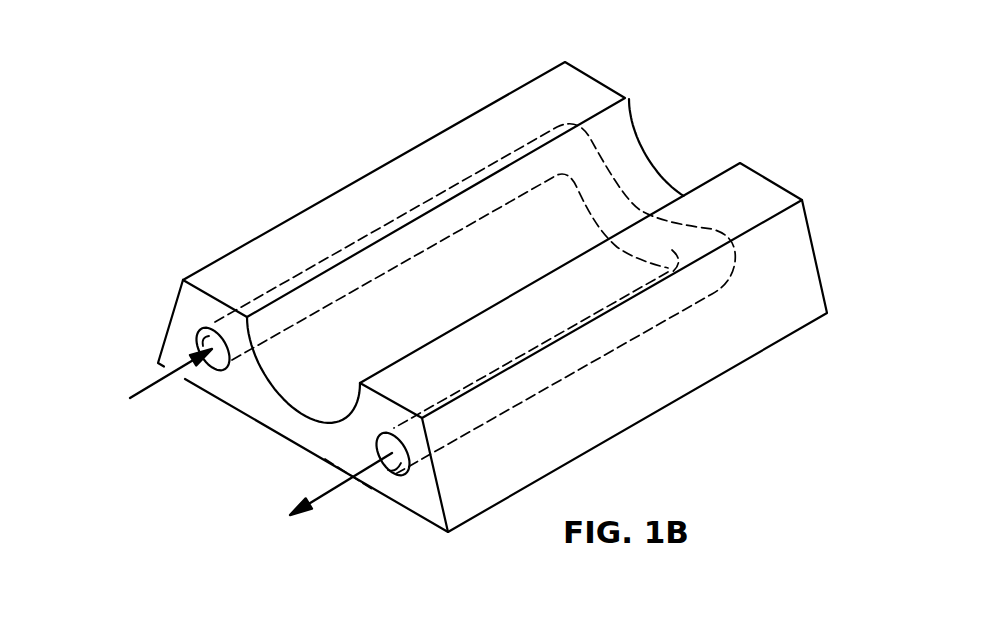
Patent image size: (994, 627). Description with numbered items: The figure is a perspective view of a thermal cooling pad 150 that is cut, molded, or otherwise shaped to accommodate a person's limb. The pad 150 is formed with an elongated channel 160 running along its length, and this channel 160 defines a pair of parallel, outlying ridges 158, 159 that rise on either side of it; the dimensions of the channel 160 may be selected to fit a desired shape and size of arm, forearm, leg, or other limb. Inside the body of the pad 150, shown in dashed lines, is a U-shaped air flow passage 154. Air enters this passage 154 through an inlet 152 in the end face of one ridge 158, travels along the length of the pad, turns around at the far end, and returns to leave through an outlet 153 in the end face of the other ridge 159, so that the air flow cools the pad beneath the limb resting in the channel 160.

The thermal cooling pad 150 is at (459, 302).
The inlet 152 is at (193, 342).
The outlet 153 is at (387, 468).
The U-shaped air flow passage 154 is at (601, 335).
The outlying ridge 158 is at (590, 75).
The outlying ridge 159 is at (773, 180).
The elongated channel 160 is at (668, 150).